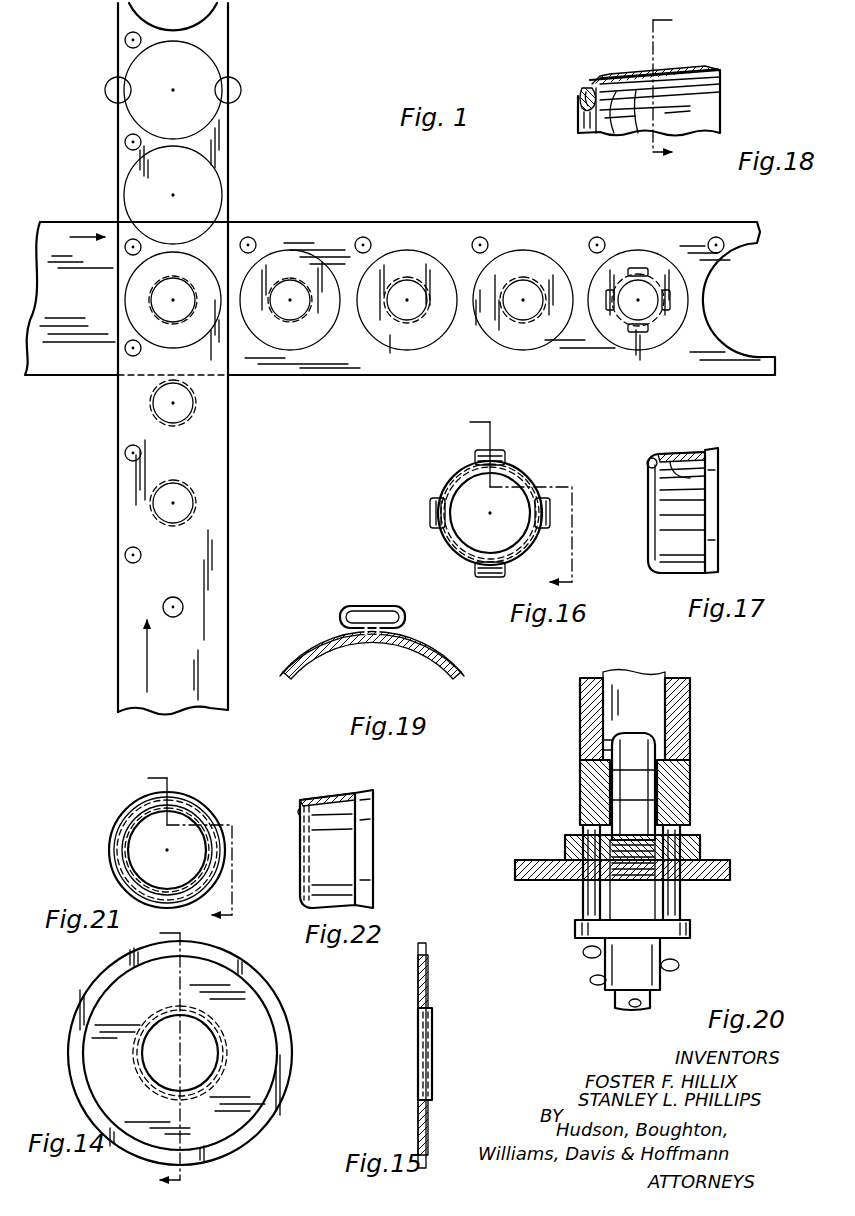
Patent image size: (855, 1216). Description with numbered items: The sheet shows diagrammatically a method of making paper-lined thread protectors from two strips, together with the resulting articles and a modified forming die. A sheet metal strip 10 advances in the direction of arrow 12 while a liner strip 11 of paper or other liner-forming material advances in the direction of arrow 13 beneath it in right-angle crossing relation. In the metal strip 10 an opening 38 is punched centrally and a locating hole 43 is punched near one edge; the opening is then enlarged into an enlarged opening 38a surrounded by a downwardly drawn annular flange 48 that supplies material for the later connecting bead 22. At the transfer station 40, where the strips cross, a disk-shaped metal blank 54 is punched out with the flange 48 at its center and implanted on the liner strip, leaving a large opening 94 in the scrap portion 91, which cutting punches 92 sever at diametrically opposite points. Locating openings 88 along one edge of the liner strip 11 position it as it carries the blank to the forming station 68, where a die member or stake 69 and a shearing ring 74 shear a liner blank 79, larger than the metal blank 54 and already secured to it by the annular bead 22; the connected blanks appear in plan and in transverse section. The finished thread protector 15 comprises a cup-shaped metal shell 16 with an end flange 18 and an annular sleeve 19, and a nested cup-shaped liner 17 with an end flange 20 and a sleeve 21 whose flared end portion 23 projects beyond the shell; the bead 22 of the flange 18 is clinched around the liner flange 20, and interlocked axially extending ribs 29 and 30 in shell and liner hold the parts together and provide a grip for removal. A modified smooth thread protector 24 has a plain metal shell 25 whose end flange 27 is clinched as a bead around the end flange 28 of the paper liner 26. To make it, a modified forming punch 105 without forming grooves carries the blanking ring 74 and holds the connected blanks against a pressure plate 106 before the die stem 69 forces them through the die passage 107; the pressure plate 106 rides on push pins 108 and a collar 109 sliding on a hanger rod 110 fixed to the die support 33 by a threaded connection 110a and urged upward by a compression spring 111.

In FIG. 1, the sheet metal strip 10 is at (113, 596).
In FIG. 1, the liner strip 11 is at (58, 376).
In FIG. 1, the arrow 12 is at (147, 678).
In FIG. 1, the arrow 13 is at (90, 237).
In FIG. 1, the thread protector 15 is at (660, 283).
In FIG. 18, the thread protector 15 is at (620, 72).
In FIG. 16, the thread protector 15 is at (440, 483).
In FIG. 17, the thread protector 15 is at (664, 452).
In FIG. 19, the thread protector 15 is at (440, 658).
In FIG. 14, the thread protector 15 is at (155, 1056).
In FIG. 18, the metal shell 16 is at (676, 72).
In FIG. 16, the metal shell 16 is at (446, 545).
In FIG. 17, the metal shell 16 is at (680, 562).
In FIG. 19, the metal shell 16 is at (322, 644).
In FIG. 18, the liner 17 is at (614, 133).
In FIG. 16, the liner 17 is at (508, 501).
In FIG. 17, the liner 17 is at (656, 500).
In FIG. 19, the liner 17 is at (306, 668).
In FIG. 18, the end flange 18 is at (580, 94).
In FIG. 16, the end flange 18 is at (474, 490).
In FIG. 17, the end flange 18 is at (648, 464).
In FIG. 18, the annular sleeve 19 is at (636, 80).
In FIG. 17, the annular sleeve 19 is at (680, 452).
In FIG. 18, the end flange 20 is at (580, 104).
In FIG. 18, the sleeve 21 is at (638, 133).
In FIG. 17, the sleeve 21 is at (705, 480).
In FIG. 1, the annular bead 22 is at (407, 322).
In FIG. 18, the annular bead 22 is at (584, 122).
In FIG. 17, the annular bead 22 is at (650, 470).
In FIG. 21, the annular bead 22 is at (175, 846).
In FIG. 14, the annular bead 22 is at (212, 1092).
In FIG. 15, the annular bead 22 is at (432, 1092).
In FIG. 18, the flared end portion 23 is at (714, 70).
In FIG. 17, the flared end portion 23 is at (712, 560).
In FIG. 19, the flared end portion 23 is at (284, 666).
In FIG. 21, the thread protector 24 is at (110, 830).
In FIG. 22, the thread protector 24 is at (310, 794).
In FIG. 22, the metal shell 25 is at (333, 795).
In FIG. 22, the paper liner 26 is at (373, 810).
In FIG. 21, the end flange 27 is at (140, 872).
In FIG. 22, the end flange 27 is at (298, 810).
In FIG. 22, the end flange 28 is at (300, 803).
In FIG. 16, the ribs 29 is at (500, 450).
In FIG. 17, the ribs 29 is at (710, 452).
In FIG. 19, the ribs 29 is at (366, 610).
In FIG. 17, the ribs 30 is at (705, 466).
In FIG. 19, the ribs 30 is at (384, 612).
In FIG. 20, the die support 33 is at (718, 862).
In FIG. 1, the opening 38 is at (183, 608).
In FIG. 1, the enlarged opening 38a is at (185, 497).
In FIG. 1, the transfer station 40 is at (228, 230).
In FIG. 1, the locating hole 43 is at (125, 556).
In FIG. 1, the annular flange 48 is at (195, 515).
In FIG. 1, the metal blank 54 is at (315, 268).
In FIG. 14, the metal blank 54 is at (265, 1025).
In FIG. 15, the metal blank 54 is at (428, 990).
In FIG. 1, the forming station 68 is at (638, 252).
In FIG. 20, the die member 69 is at (612, 810).
In FIG. 20, the shearing ring 74 is at (690, 786).
In FIG. 14, the liner blank 79 is at (292, 1050).
In FIG. 15, the liner blank 79 is at (420, 952).
In FIG. 1, the locating openings 88 is at (251, 240).
In FIG. 1, the scrap portion 91 is at (228, 155).
In FIG. 1, the cutting punches 92 is at (232, 92).
In FIG. 1, the opening 94 is at (205, 70).
In FIG. 20, the forming punch 105 is at (692, 720).
In FIG. 20, the pressure plate 106 is at (692, 810).
In FIG. 20, the die passage 107 is at (610, 778).
In FIG. 20, the push pins 108 is at (680, 900).
In FIG. 20, the collar 109 is at (692, 929).
In FIG. 20, the hanger rod 110 is at (620, 896).
In FIG. 20, the threaded connection 110a is at (612, 862).
In FIG. 20, the compression spring 111 is at (680, 968).